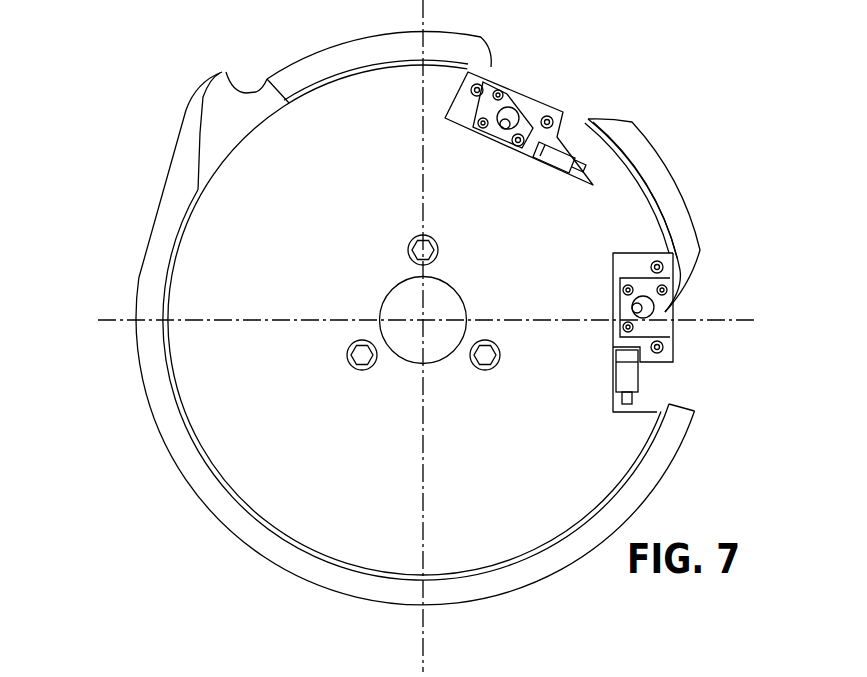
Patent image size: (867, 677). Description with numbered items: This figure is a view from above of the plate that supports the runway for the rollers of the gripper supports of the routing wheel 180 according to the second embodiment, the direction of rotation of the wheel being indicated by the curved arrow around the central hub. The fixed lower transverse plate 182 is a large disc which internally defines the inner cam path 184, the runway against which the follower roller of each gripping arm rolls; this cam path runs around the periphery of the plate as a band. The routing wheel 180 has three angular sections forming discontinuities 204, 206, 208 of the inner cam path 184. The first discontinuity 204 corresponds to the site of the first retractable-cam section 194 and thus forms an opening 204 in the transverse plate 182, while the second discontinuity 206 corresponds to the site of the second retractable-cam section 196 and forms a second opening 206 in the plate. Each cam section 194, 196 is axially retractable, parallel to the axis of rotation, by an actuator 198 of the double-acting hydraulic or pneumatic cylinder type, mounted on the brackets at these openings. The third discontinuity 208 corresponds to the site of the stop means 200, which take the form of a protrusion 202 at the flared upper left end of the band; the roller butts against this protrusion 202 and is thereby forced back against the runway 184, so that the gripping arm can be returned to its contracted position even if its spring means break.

The fixed lower transverse plate 182 is at (288, 435).
The inner cam path 184 is at (515, 557).
The first retractable-cam section 194 is at (645, 322).
The second retractable-cam section 196 is at (510, 104).
The actuator 198 is at (560, 117).
The stop means 200 is at (226, 98).
The protrusion 202 is at (192, 119).
The first discontinuity 204 is at (682, 381).
The second discontinuity 206 is at (561, 86).
The third discontinuity 208 is at (258, 128).
The routing wheel 180 is at (512, 388).